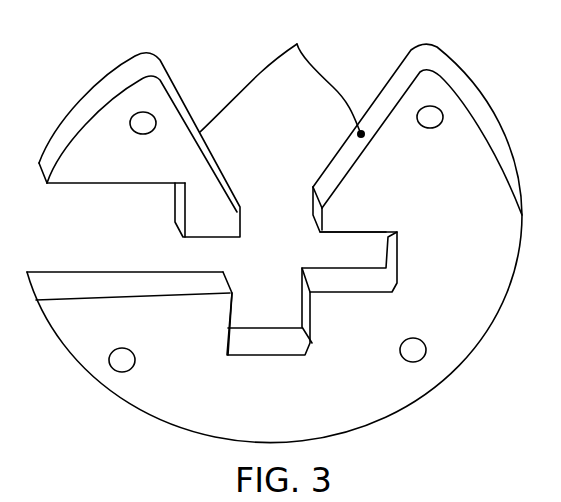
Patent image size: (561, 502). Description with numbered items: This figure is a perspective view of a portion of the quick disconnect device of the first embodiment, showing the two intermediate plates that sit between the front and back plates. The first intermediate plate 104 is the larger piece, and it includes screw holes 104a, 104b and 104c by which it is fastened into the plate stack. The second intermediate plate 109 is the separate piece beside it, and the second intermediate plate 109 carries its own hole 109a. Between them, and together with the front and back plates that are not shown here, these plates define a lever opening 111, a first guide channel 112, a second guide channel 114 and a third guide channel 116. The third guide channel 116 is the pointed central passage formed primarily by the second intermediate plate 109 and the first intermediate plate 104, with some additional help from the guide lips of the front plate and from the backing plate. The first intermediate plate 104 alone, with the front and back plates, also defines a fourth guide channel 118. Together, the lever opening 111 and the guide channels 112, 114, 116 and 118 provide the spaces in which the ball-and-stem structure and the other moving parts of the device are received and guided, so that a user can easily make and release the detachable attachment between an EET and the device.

The first intermediate plate 104 is at (363, 88).
The screw hole 104a is at (440, 105).
The screw hole 104b is at (418, 339).
The screw hole 104c is at (128, 349).
The second intermediate plate 109 is at (205, 93).
The plate hole 109a is at (140, 112).
The lever opening 111 is at (44, 184).
The first guide channel 112 is at (124, 185).
The second guide channel 114 is at (199, 239).
The third guide channel 116 is at (297, 44).
The fourth guide channel 118 is at (343, 240).